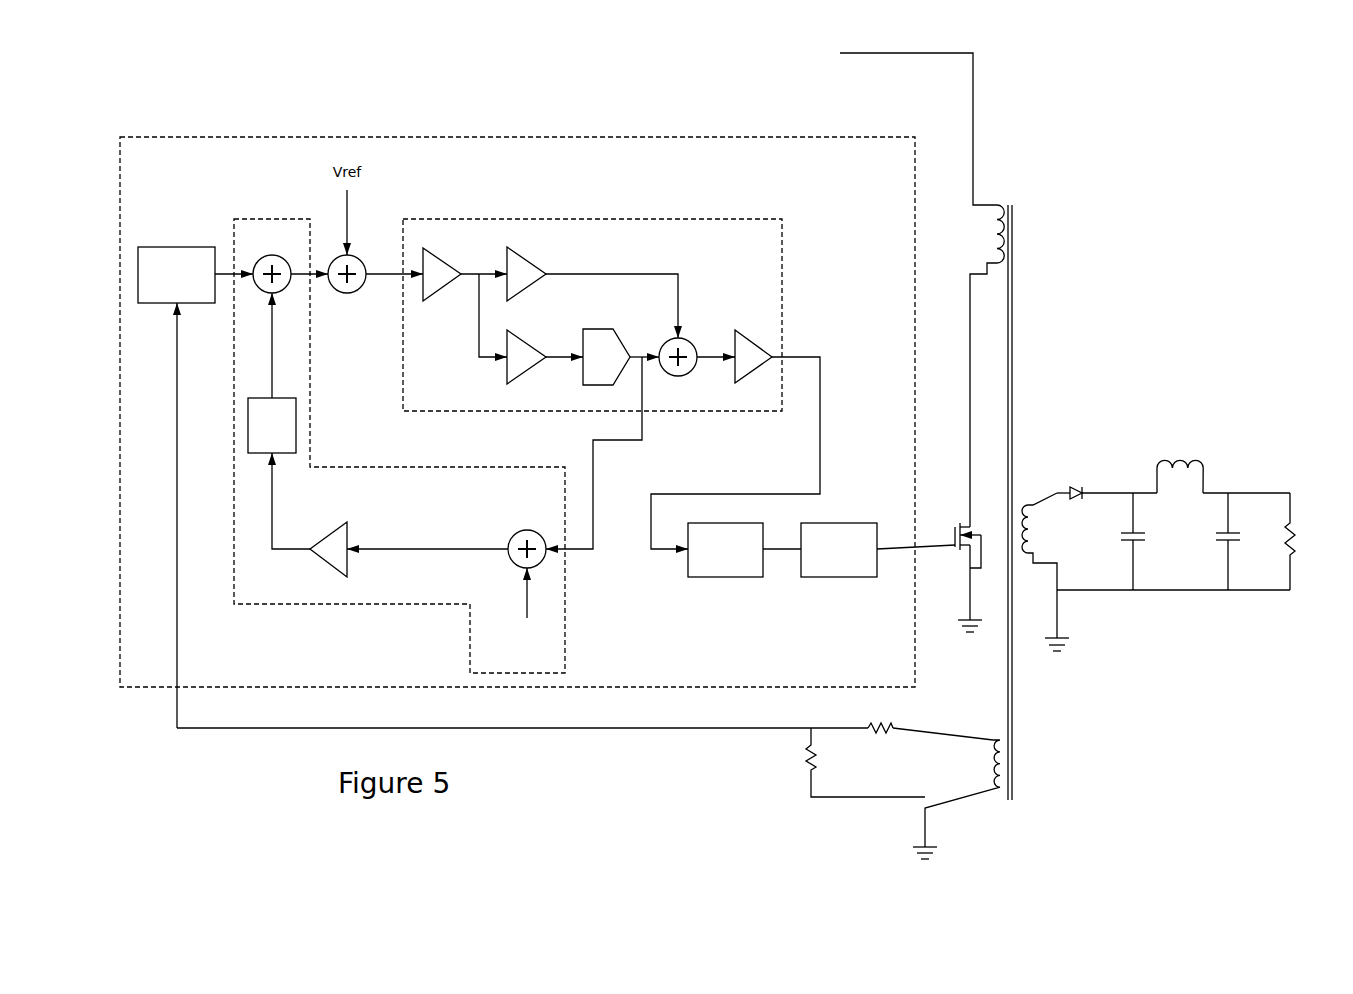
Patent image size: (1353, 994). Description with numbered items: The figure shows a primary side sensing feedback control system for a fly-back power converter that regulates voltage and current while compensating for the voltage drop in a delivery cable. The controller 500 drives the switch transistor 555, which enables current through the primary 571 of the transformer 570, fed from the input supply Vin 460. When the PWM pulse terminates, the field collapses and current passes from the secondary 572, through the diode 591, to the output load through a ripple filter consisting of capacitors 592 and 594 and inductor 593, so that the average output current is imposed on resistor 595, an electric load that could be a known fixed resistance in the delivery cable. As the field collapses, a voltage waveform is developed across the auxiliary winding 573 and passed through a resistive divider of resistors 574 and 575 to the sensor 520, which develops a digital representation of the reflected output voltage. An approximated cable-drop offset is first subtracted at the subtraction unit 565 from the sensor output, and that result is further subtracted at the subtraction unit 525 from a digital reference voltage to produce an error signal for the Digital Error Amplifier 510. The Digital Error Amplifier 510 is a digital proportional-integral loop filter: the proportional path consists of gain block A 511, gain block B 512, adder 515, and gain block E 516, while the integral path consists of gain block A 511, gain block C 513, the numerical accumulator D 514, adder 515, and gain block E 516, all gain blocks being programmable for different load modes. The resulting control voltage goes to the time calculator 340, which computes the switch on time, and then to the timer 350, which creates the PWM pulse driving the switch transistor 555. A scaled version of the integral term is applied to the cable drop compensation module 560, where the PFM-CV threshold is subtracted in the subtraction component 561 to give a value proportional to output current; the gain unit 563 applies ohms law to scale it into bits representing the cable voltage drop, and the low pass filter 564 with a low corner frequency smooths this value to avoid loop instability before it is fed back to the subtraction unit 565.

The controller 500 is at (432, 137).
The sensor 520 is at (178, 240).
The subtraction unit 565 is at (272, 240).
The subtraction unit 525 is at (338, 253).
The Digital Error Amplifier 510 is at (530, 216).
The gain block A 511 is at (445, 245).
The gain block B 512 is at (541, 262).
The gain block C 513 is at (530, 337).
The numerical accumulator 514 is at (620, 330).
The adder 515 is at (694, 330).
The gain block E 516 is at (755, 328).
The cable drop compensation module 560 is at (340, 458).
The low pass filter 564 is at (257, 392).
The gain unit 563 is at (320, 563).
The subtraction component 561 is at (545, 574).
The time calculator 340 is at (712, 583).
The timer 350 is at (825, 583).
The switch transistor 555 is at (958, 556).
The input voltage 460 is at (866, 39).
The transformer 570 is at (1015, 370).
The primary 571 is at (990, 198).
The secondary 572 is at (1025, 487).
The output diode 591 is at (1078, 480).
The capacitor 592 is at (1155, 543).
The inductor 593 is at (1183, 458).
The capacitor 594 is at (1245, 540).
The resistor 595 is at (1300, 528).
The auxiliary winding 573 is at (992, 805).
The resistor 574 is at (878, 745).
The resistor 575 is at (823, 755).